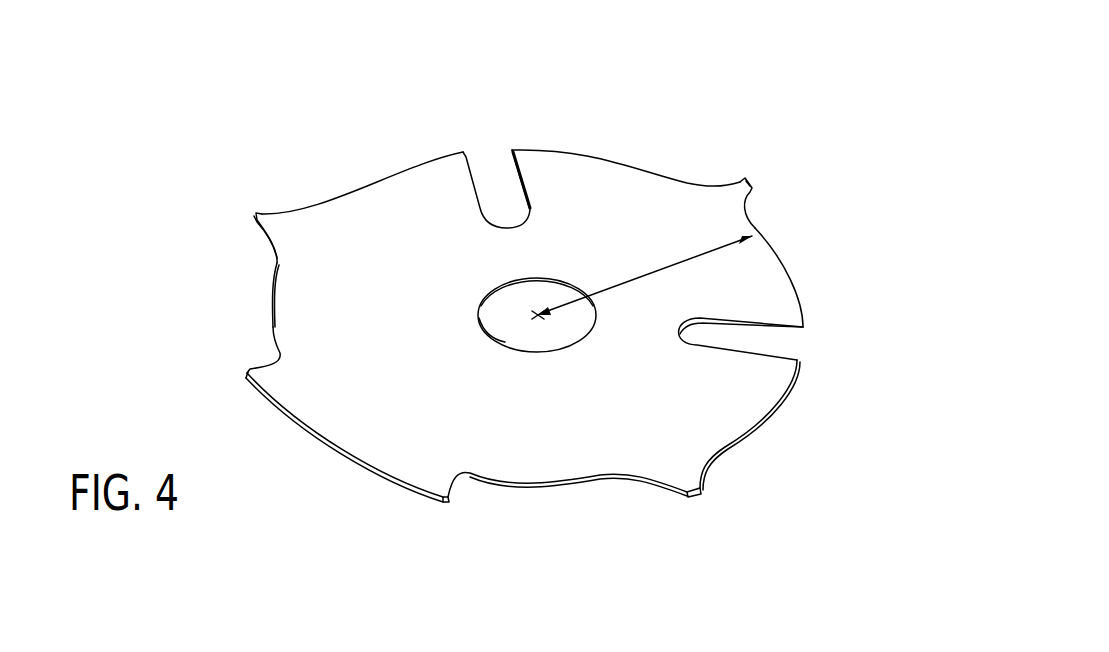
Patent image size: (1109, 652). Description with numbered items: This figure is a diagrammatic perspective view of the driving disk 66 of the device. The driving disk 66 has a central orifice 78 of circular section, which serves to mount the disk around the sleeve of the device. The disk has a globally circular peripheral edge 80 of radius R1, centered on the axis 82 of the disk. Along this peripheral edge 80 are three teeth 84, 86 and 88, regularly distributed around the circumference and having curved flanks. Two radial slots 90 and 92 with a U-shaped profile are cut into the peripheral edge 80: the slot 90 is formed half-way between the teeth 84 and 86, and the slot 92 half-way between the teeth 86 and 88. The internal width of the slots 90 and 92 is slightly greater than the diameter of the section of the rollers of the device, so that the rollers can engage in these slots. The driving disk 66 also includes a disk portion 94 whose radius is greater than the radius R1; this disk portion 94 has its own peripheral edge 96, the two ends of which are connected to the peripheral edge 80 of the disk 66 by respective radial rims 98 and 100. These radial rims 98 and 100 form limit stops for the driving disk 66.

The driving disk 66 is at (665, 125).
The central orifice 78 is at (478, 316).
The peripheral edge 80 is at (350, 180).
The axis 82 is at (537, 315).
The tooth 84 is at (256, 214).
The tooth 86 is at (752, 188).
The tooth 88 is at (695, 496).
The radial slot 90 is at (466, 152).
The radial slot 92 is at (797, 338).
The disk portion 94 is at (370, 447).
The peripheral edge 96 is at (309, 439).
The radial rim 98 is at (266, 366).
The radial rim 100 is at (460, 493).